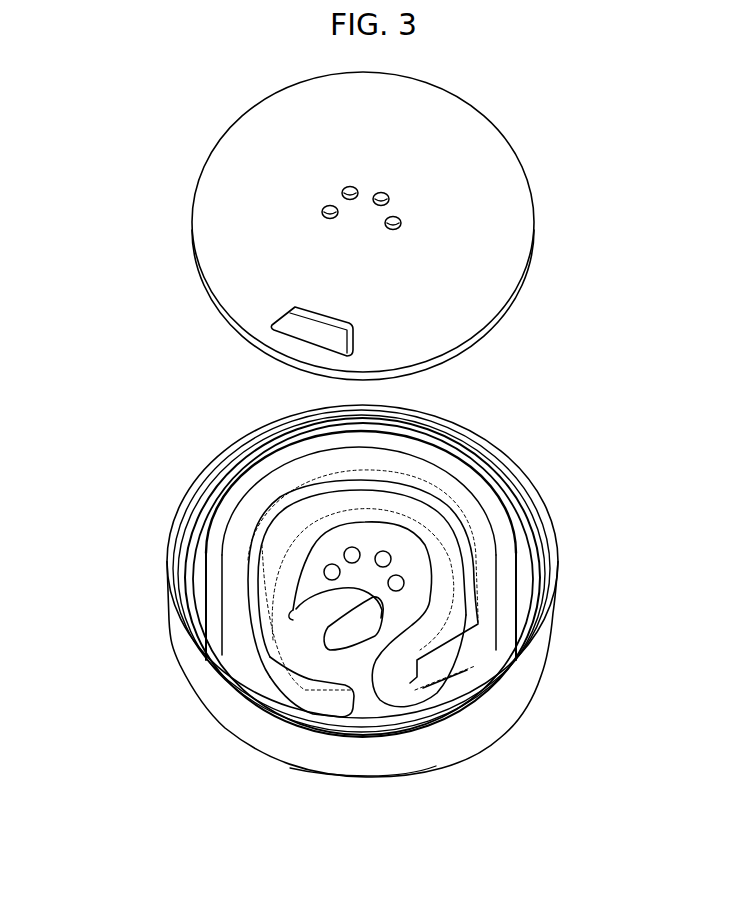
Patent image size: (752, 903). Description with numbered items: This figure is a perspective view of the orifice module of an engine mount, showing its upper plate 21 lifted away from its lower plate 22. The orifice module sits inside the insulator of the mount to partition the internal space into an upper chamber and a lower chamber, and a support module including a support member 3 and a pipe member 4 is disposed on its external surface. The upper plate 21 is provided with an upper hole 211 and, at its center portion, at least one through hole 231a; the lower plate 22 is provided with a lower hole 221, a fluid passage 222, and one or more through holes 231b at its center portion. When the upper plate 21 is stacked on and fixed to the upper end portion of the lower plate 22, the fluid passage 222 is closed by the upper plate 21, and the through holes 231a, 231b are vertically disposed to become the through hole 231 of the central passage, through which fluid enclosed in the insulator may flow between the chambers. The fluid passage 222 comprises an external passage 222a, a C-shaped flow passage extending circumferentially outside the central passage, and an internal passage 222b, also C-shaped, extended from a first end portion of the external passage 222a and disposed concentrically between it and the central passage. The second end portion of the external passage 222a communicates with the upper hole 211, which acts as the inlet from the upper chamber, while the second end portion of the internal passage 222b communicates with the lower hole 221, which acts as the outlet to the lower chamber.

The upper plate 21 is at (165, 206).
The upper hole 211 is at (296, 336).
The through hole 231a is at (401, 223).
The through hole 231 is at (642, 281).
The through hole 231b is at (398, 577).
The lower plate 22 is at (200, 487).
The support member 3 is at (187, 587).
The pipe member 4 is at (188, 663).
The fluid passage 222 is at (655, 680).
The external passage 222a is at (493, 627).
The internal passage 222b is at (430, 636).
The lower hole 221 is at (348, 631).